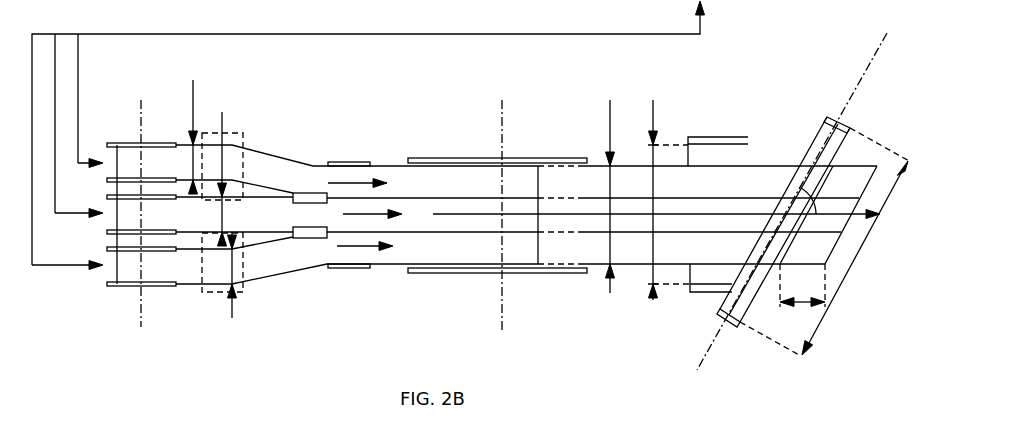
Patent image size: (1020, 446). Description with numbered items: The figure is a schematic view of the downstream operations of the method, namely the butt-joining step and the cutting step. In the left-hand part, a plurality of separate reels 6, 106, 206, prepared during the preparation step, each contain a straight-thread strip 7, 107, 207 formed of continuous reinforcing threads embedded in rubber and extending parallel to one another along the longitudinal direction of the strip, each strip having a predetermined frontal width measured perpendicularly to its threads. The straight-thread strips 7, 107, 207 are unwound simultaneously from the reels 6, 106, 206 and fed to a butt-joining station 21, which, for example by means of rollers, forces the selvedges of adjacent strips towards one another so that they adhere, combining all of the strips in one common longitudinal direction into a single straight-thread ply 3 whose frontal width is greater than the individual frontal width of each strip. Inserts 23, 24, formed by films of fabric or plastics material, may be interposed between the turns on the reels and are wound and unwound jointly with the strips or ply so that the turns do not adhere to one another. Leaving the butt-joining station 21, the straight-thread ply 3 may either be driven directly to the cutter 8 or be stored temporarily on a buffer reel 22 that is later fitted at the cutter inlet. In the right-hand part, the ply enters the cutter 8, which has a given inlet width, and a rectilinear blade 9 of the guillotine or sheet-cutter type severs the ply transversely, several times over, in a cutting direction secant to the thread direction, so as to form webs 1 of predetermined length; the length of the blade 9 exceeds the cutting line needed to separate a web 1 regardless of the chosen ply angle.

The web 1 is at (858, 180).
The straight-thread ply 3 is at (630, 168).
The reel 6 is at (115, 142).
The straight-thread strip 7 is at (170, 158).
The cutter 8 is at (733, 338).
The rectilinear blade 9 is at (718, 309).
The butt-joining station 21 is at (307, 182).
The buffer reel 22 is at (466, 158).
The insert 23 is at (252, 293).
The insert 24 is at (343, 270).
The reel 106 is at (130, 193).
The straight-thread strip 107 is at (148, 217).
The reel 206 is at (130, 247).
The straight-thread strip 207 is at (130, 278).